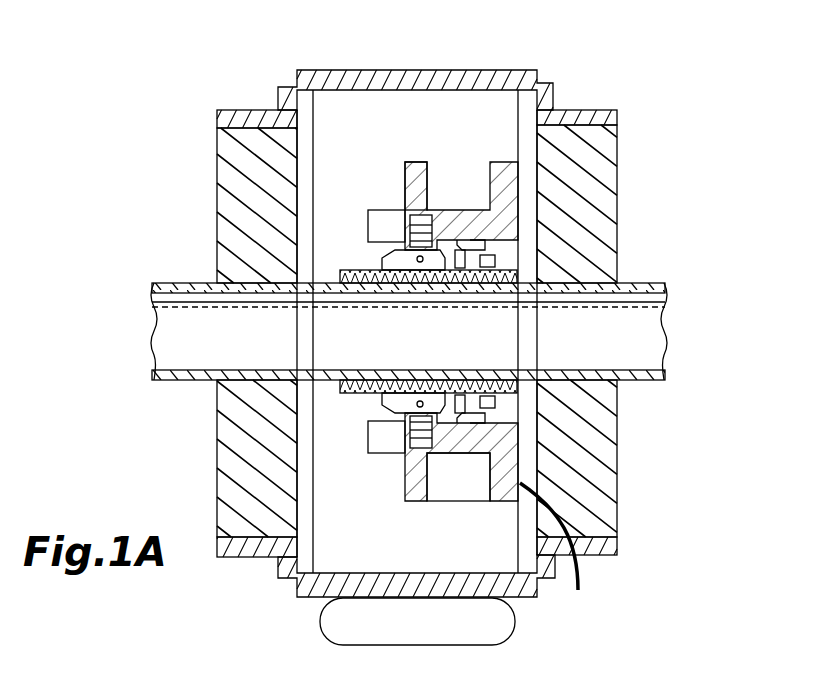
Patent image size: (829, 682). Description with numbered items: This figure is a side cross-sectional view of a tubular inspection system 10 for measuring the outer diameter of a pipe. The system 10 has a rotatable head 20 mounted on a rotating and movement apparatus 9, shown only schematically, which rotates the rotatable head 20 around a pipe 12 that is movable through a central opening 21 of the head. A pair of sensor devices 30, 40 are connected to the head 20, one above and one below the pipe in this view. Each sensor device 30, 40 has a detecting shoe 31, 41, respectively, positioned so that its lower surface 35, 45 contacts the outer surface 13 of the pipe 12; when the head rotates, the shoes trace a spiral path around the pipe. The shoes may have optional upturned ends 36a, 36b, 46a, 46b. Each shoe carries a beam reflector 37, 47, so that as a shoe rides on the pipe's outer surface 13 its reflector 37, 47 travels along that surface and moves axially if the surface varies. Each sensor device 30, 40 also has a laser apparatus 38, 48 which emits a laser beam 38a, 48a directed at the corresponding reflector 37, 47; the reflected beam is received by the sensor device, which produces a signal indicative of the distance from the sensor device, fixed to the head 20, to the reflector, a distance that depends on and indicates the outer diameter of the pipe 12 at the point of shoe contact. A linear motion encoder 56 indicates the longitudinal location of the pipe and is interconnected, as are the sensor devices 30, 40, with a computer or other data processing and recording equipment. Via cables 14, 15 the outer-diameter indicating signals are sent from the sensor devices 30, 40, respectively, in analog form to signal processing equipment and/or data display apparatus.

The system 10 is at (236, 86).
The rotatable head 20 is at (418, 70).
The sensor device 30 is at (460, 162).
The cable 14 is at (518, 185).
The laser apparatus 38 is at (445, 170).
The pipe 12 is at (195, 283).
The upturned end 36a is at (350, 270).
The laser beam 38a is at (482, 232).
The beam reflector 37 is at (490, 257).
The outer surface 13 is at (660, 283).
The upturned end 36b is at (512, 252).
The detecting shoe 31 is at (378, 268).
The upturned end 46a is at (335, 378).
The lower surface 45 is at (398, 385).
The lower surface 35 is at (440, 292).
The detecting shoe 41 is at (460, 392).
The upturned end 46b is at (512, 405).
The beam reflector 47 is at (548, 410).
The central opening 21 is at (244, 380).
The laser beam 48a is at (520, 438).
The sensor device 40 is at (445, 503).
The laser apparatus 48 is at (467, 487).
The cable 15 is at (578, 575).
The rotating and movement apparatus 9 is at (362, 622).
The linear motion encoder 56 is at (527, 622).